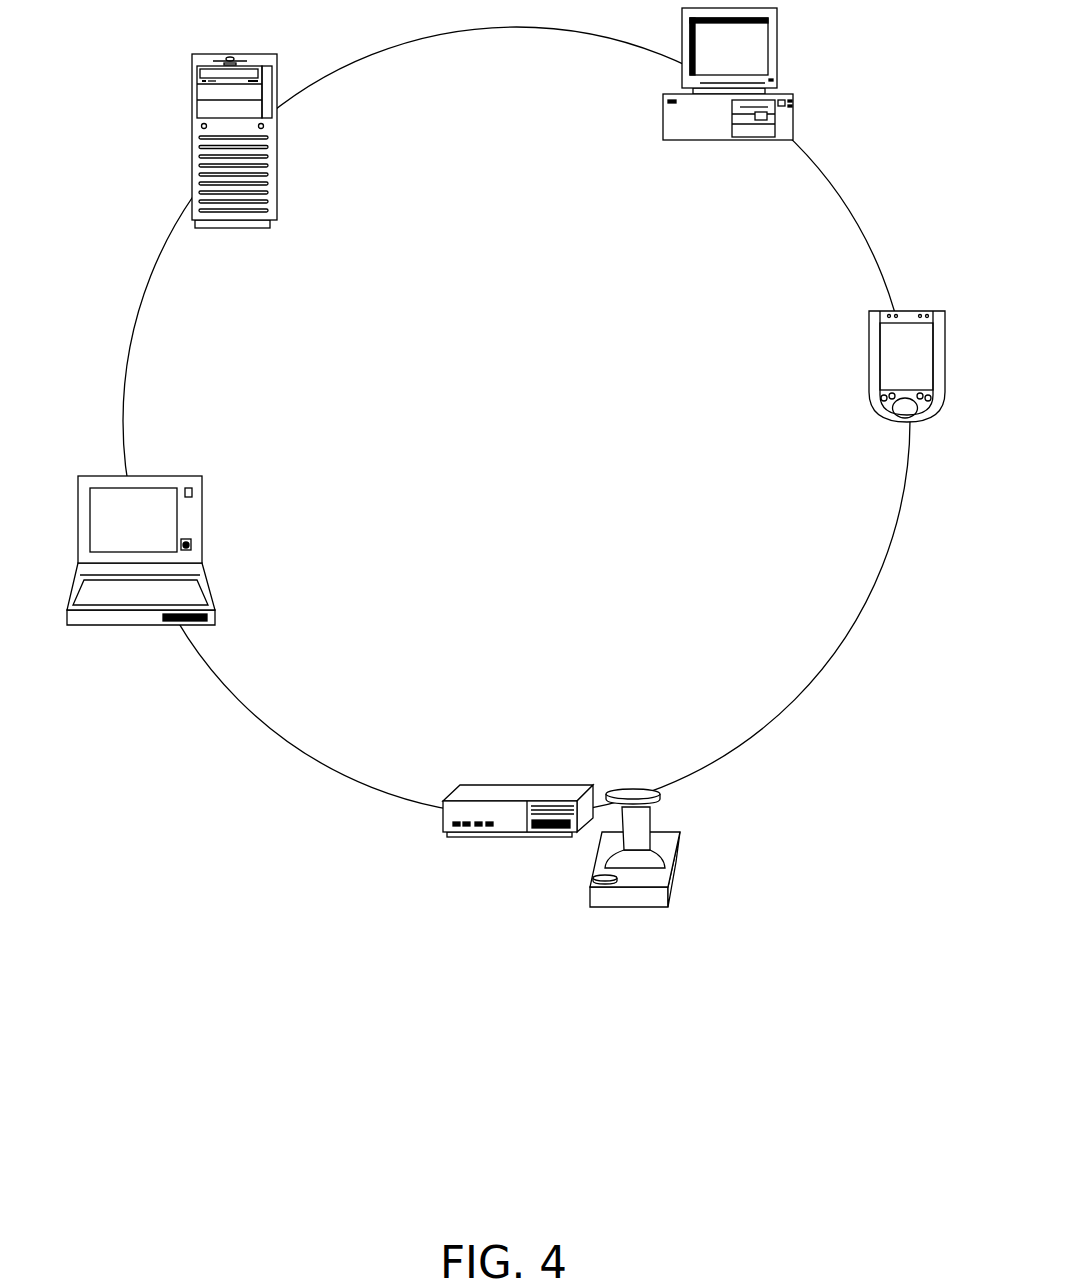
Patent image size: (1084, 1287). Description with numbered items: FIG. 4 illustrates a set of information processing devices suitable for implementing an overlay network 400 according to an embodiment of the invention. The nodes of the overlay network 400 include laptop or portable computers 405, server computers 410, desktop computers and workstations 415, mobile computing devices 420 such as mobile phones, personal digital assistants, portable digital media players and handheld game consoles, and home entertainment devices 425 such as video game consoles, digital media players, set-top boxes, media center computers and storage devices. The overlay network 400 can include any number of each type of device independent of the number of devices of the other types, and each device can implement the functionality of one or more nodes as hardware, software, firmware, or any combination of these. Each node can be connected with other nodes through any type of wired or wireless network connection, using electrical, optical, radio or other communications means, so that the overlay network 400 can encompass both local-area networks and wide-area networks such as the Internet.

The overlay network 400 is at (516, 486).
The laptop or portable computers 405 is at (210, 593).
The server computers 410 is at (278, 200).
The desktop computers and workstations 415 is at (700, 143).
The mobile computing devices 420 is at (893, 425).
The home entertainment devices 425 is at (481, 856).